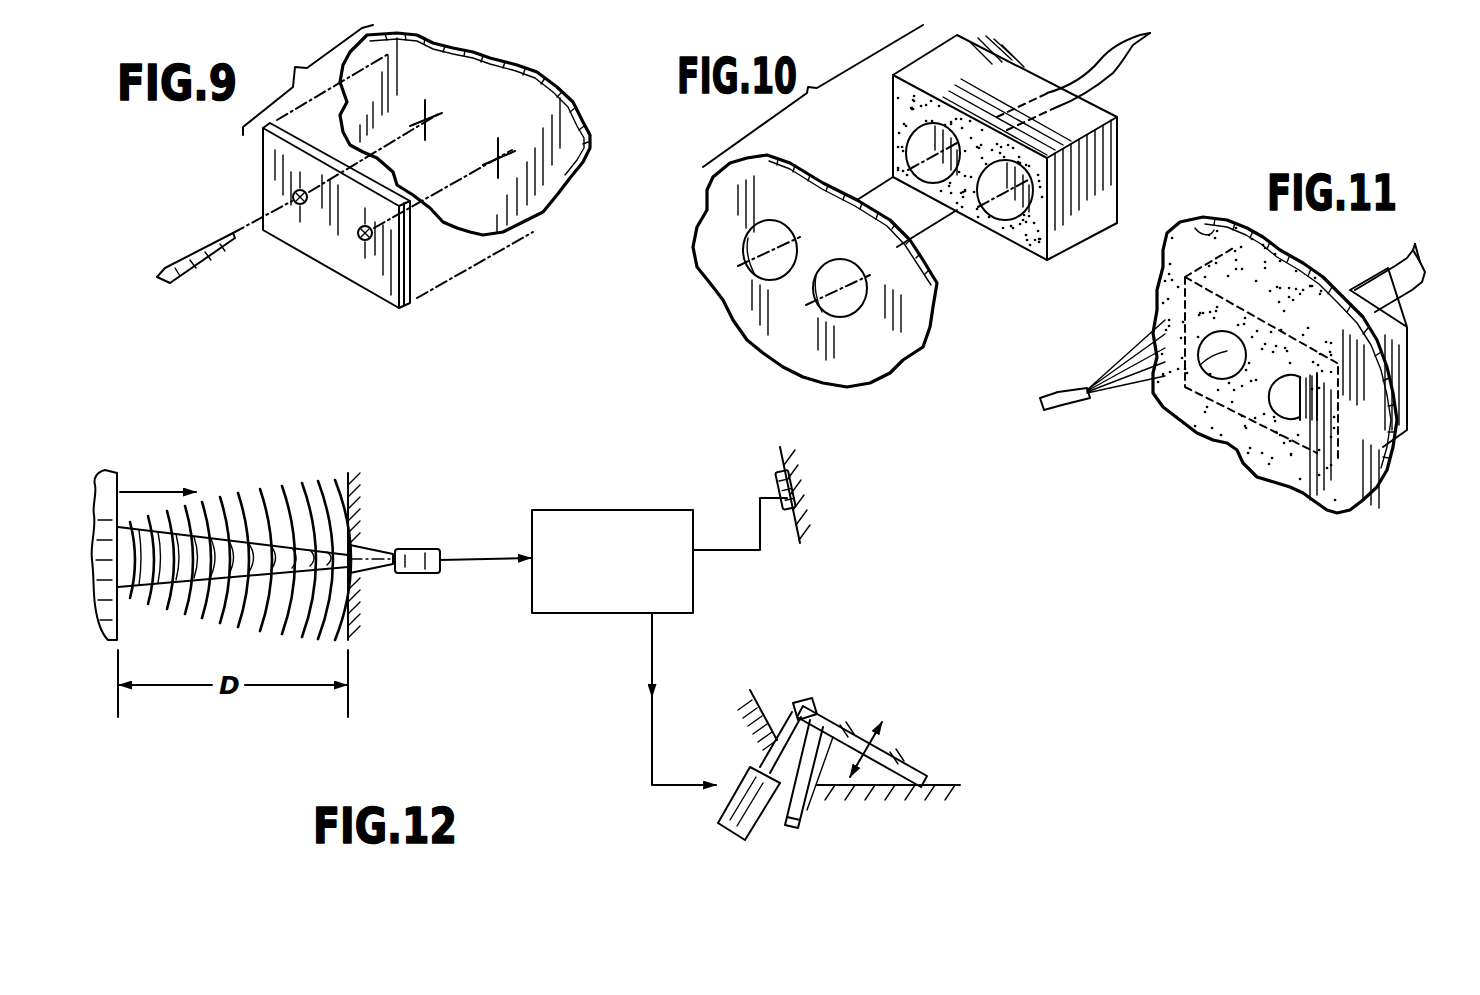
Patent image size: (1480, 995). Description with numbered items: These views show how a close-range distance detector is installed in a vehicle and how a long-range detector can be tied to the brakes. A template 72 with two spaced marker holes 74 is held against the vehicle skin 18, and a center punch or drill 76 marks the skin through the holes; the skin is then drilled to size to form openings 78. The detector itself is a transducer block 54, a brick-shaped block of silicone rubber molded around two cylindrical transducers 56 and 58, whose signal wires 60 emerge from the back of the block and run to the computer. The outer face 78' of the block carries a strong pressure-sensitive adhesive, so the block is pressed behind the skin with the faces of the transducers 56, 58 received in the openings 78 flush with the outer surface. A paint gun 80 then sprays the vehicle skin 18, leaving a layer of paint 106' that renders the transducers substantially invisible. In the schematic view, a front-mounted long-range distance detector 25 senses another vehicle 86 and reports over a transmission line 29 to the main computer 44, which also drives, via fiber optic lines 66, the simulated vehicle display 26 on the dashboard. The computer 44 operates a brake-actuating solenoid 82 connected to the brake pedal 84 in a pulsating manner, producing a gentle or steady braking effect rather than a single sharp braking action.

In FIG. 9, the vehicle skin 18 is at (492, 52).
In FIG. 10, the vehicle skin 18 is at (722, 195).
In FIG. 11, the vehicle skin 18 is at (1365, 493).
In FIG. 12, the vehicle skin 18 is at (355, 495).
In FIG. 9, the template 72 is at (330, 255).
In FIG. 9, the marker holes 74 is at (294, 196).
In FIG. 9, the center punch or drill 76 is at (165, 235).
In FIG. 10, the transducer block 54 is at (998, 62).
In FIG. 11, the transducer block 54 is at (1393, 343).
In FIG. 10, the transducer 56 is at (1002, 217).
In FIG. 11, the transducer 56 is at (1285, 400).
In FIG. 10, the transducer 58 is at (908, 150).
In FIG. 11, the transducer 58 is at (1165, 410).
In FIG. 10, the transducer signal wires 60 is at (1092, 58).
In FIG. 11, the transducer signal wires 60 is at (1403, 268).
In FIG. 10, the openings 78 is at (799, 284).
In FIG. 10, the outer face 78' is at (865, 94).
In FIG. 11, the layer of paint 106' is at (1275, 345).
In FIG. 11, the paint gun 80 is at (1050, 405).
In FIG. 12, the another vehicle 86 is at (120, 478).
In FIG. 12, the long-range distance detector 25 is at (375, 550).
In FIG. 12, the transmission lines 29 is at (470, 565).
In FIG. 12, the main computer 44 is at (580, 510).
In FIG. 12, the fiber optic lines 66 is at (735, 553).
In FIG. 12, the simulated vehicle display 26 is at (795, 480).
In FIG. 12, the brake-actuating solenoid 82 is at (720, 815).
In FIG. 12, the brake pedal 84 is at (818, 718).